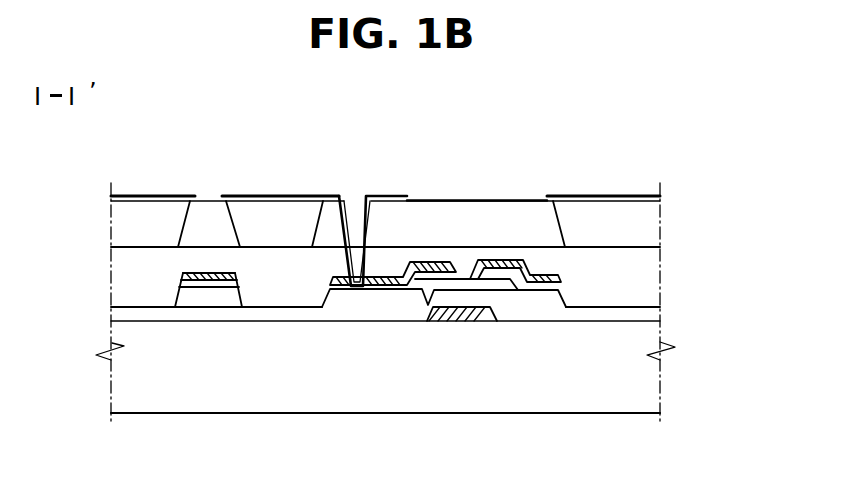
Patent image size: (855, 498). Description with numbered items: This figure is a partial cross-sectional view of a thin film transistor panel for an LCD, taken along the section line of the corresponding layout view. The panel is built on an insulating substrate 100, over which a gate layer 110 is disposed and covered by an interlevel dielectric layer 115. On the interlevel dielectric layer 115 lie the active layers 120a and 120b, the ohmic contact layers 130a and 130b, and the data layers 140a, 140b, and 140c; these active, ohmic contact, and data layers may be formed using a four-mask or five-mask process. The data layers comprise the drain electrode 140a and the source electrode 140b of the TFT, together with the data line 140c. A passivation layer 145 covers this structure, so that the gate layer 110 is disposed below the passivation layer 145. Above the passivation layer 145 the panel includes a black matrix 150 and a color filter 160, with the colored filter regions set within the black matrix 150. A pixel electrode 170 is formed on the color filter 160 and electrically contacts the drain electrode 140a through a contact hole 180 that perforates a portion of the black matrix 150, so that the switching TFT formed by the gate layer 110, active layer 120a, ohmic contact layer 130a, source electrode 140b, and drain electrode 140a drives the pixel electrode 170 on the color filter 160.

The insulating substrate 100 is at (647, 378).
The gate layer 110 is at (447, 318).
The interlevel dielectric layer 115 is at (647, 318).
The active layer 120a is at (565, 300).
The active layer 120b is at (183, 310).
The ohmic contact layer 130a is at (537, 292).
The ohmic contact layer 130b is at (203, 288).
The drain electrode 140a is at (405, 262).
The source electrode 140b is at (499, 260).
The data line 140c is at (221, 283).
The passivation layer 145 is at (647, 281).
The black matrix 150 is at (208, 210).
The color filter 160 is at (165, 208).
The pixel electrode 170 is at (287, 207).
The contact hole 180 is at (352, 207).